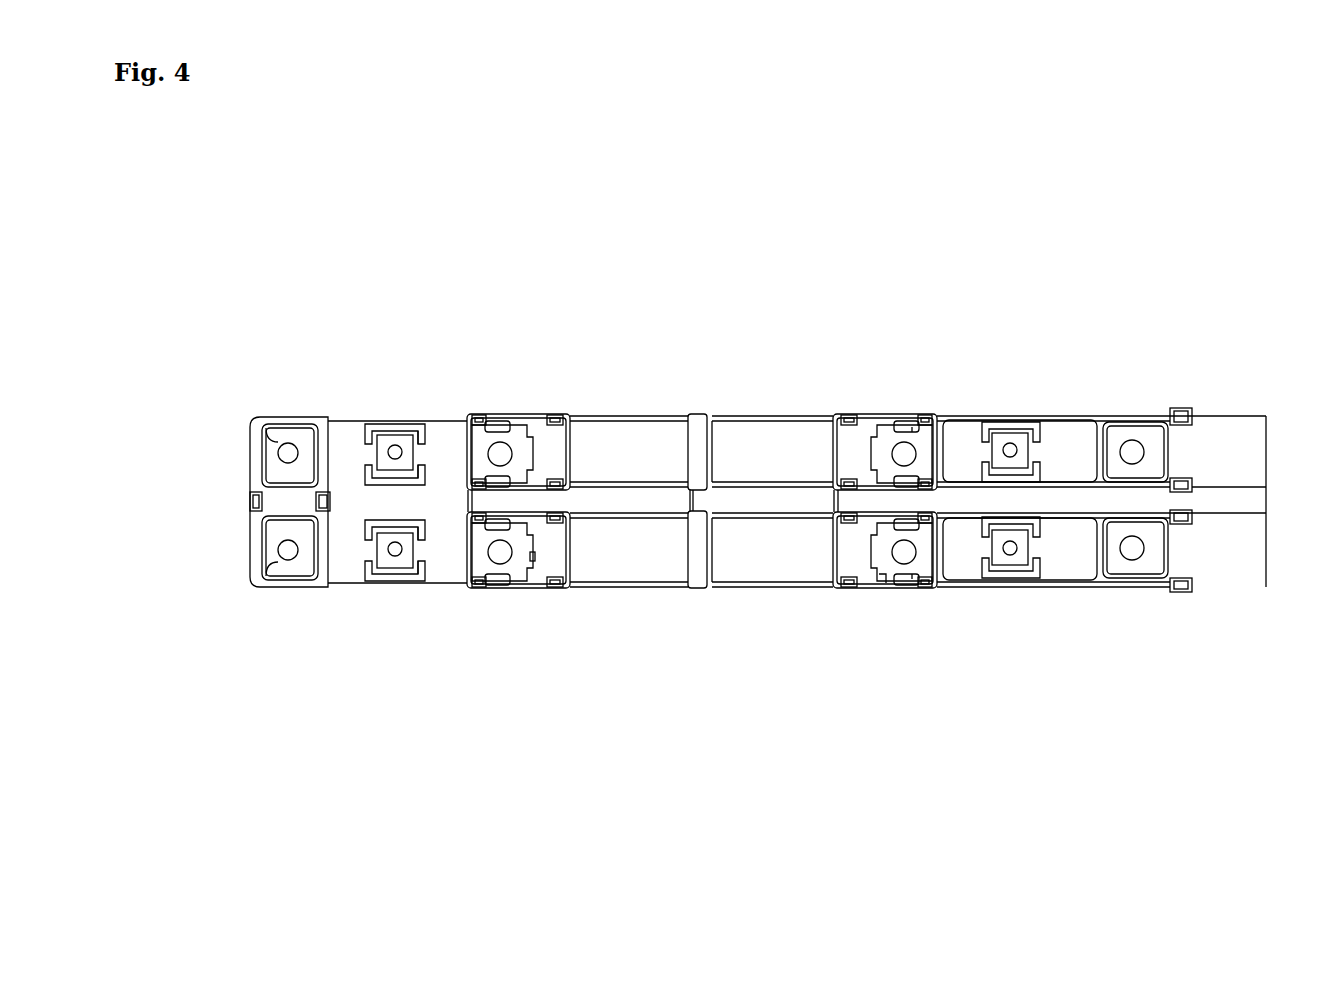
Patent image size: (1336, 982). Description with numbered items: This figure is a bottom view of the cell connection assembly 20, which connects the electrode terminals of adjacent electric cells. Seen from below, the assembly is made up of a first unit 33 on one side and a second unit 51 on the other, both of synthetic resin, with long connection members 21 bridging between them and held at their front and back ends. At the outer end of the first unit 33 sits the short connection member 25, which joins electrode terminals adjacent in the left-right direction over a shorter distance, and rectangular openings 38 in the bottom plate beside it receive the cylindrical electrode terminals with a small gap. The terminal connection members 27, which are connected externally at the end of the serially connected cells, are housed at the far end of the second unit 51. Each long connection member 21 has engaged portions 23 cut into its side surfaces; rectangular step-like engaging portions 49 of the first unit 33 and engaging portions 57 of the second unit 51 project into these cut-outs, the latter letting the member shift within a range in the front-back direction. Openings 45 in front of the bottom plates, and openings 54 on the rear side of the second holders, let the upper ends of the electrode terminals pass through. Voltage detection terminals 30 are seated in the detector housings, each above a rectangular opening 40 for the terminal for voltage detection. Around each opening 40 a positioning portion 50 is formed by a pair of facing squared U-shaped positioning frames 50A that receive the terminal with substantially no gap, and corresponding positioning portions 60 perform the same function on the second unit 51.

The cell connection assembly 20 is at (857, 274).
The long connection member 21 is at (528, 418).
The engaged portion 23 is at (503, 424).
The short connection member 25 is at (270, 463).
The terminal connection member 27 is at (1150, 435).
The voltage detection terminal 30 is at (373, 433).
The first unit 33 is at (546, 303).
The opening 38 is at (269, 432).
The opening 40 is at (395, 450).
The opening 45 is at (533, 573).
The engaging portion 49 is at (490, 425).
The positioning portion 50 is at (359, 421).
The positioning frame 50A is at (425, 432).
The second unit 51 is at (1007, 312).
The opening 54 is at (882, 577).
The engaging portion 57 is at (913, 430).
The positioning portion 60 is at (1063, 425).